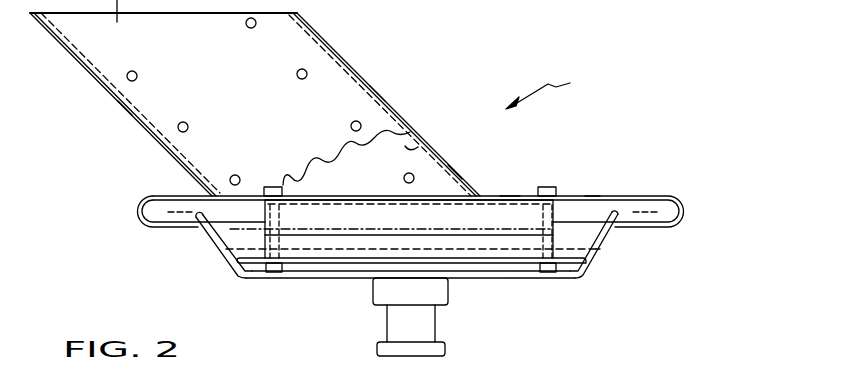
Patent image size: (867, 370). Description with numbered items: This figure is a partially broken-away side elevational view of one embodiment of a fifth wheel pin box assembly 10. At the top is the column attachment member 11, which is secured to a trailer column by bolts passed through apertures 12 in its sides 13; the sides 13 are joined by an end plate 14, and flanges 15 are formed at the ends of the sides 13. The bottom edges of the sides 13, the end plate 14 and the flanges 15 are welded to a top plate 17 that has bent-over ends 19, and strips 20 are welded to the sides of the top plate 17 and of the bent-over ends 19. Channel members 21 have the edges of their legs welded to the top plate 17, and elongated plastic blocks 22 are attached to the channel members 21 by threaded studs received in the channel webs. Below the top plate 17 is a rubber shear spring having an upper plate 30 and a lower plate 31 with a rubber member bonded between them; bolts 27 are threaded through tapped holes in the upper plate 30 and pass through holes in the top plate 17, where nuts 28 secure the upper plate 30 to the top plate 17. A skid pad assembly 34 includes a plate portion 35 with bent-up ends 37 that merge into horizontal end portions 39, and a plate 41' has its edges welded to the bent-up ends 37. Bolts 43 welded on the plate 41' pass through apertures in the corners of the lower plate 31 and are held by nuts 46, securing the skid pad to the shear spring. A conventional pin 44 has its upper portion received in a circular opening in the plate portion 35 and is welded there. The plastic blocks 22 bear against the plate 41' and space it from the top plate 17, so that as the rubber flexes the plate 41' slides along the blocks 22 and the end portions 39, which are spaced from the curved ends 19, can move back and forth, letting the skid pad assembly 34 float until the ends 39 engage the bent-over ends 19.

The fifth wheel pin box assembly 10 is at (550, 89).
The column attachment member 11 is at (379, 93).
The apertures 12 is at (351, 124).
The sides 13 is at (420, 140).
The end plate 14 is at (348, 55).
The flanges 15 is at (122, 104).
The top plate 17 is at (510, 192).
The bent-over ends 19 is at (138, 211).
The strips 20 is at (592, 196).
The channel members 21 is at (362, 215).
The elongated plastic blocks 22 is at (301, 275).
The bolts 27 is at (281, 186).
The nuts 28 is at (256, 184).
The upper plate 30 is at (454, 184).
The lower plate 31 is at (363, 280).
The skid pad assembly 34 is at (602, 248).
The plate portion 35 is at (250, 280).
The bent-up ends 37 is at (215, 254).
The horizontal end portions 39 is at (167, 185).
The plate 41' is at (411, 287).
The bolts 43 is at (576, 282).
The pin 44 is at (452, 288).
The nuts 46 is at (604, 262).